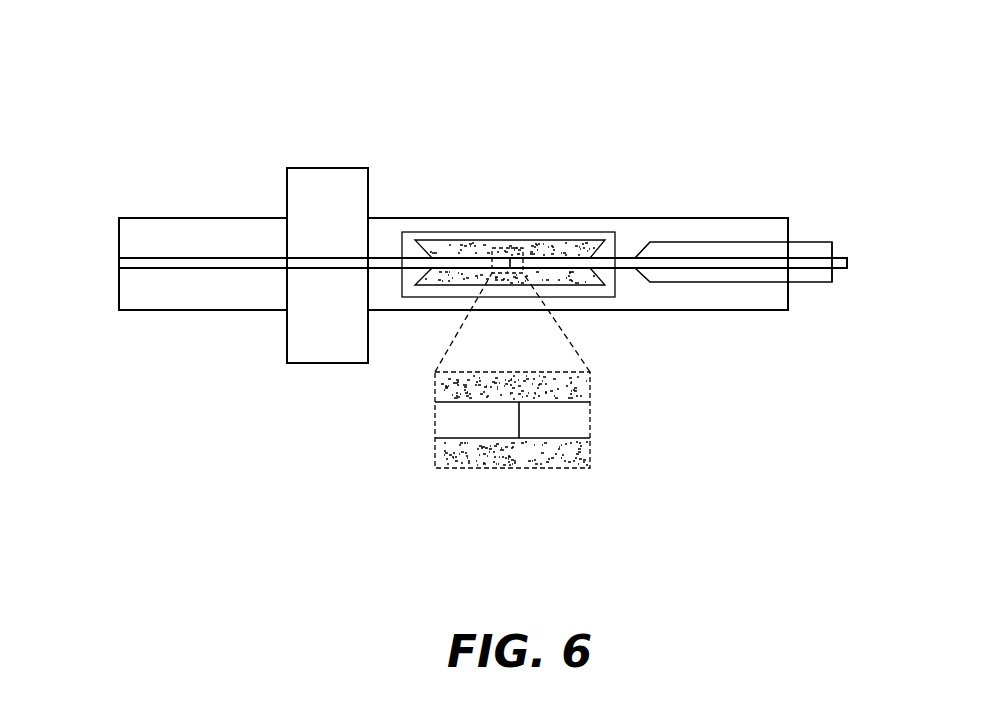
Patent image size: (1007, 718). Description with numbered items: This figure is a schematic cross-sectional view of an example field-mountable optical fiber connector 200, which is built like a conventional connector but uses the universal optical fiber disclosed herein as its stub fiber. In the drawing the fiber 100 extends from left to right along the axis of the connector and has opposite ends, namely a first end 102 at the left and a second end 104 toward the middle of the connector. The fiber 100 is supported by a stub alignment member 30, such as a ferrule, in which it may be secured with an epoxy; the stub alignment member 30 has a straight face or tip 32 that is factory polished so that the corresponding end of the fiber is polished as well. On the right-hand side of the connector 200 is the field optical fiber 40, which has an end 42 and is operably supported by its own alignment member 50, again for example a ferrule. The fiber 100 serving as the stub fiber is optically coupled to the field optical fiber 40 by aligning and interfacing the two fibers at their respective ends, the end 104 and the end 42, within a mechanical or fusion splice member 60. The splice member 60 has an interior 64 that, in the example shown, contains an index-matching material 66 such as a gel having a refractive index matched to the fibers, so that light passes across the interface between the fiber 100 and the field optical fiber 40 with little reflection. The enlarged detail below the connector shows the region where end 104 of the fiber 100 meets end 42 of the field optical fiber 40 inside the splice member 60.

The connector 200 is at (730, 72).
The stub alignment member 30 is at (188, 237).
The straight face or tip 32 is at (119, 226).
The fiber 100 is at (170, 268).
The end of fiber 102 is at (119, 260).
The splice member 60 is at (423, 235).
The interior 64 is at (473, 241).
The index-matching material 66 is at (533, 252).
The field optical fiber 40 is at (732, 257).
The alignment member 50 is at (818, 243).
The end of fiber 104 is at (519, 412).
The end of field fiber 42 is at (519, 428).